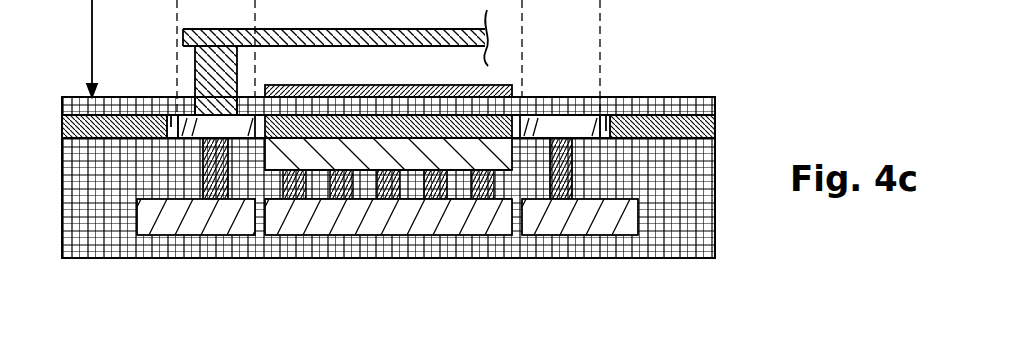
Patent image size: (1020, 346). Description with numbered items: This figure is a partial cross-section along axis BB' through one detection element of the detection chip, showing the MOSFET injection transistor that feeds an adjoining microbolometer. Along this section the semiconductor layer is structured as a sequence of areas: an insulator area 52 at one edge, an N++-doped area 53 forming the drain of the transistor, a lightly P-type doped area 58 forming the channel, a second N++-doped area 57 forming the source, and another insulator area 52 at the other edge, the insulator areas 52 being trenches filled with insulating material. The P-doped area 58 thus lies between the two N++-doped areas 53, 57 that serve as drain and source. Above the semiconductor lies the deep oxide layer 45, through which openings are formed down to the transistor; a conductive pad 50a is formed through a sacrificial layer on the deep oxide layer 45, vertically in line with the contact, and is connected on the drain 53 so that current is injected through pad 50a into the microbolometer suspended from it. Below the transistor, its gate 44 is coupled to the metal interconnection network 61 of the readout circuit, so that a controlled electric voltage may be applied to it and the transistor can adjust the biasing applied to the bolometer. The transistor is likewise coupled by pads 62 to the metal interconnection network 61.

The gate 44 is at (435, 152).
The deep oxide layer 45 is at (75, 106).
The conductive pad 50a is at (195, 61).
The insulator area 52 is at (172, 115).
The N++-doped area 53 is at (193, 138).
The second N++-doped area 57 is at (530, 120).
The lightly P-type doped area 58 is at (308, 115).
The metal interconnection network 61 is at (162, 223).
The pads 62 is at (227, 172).